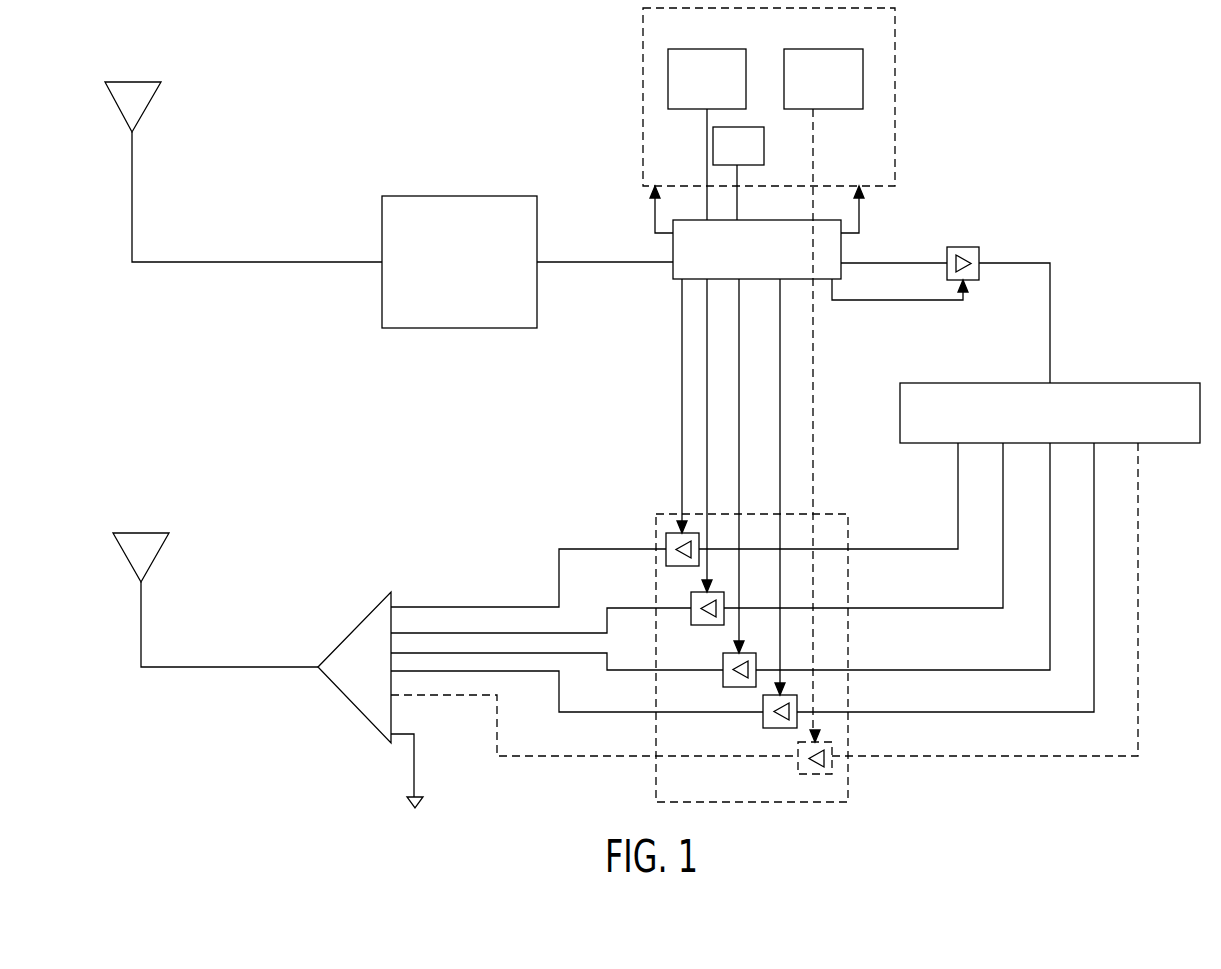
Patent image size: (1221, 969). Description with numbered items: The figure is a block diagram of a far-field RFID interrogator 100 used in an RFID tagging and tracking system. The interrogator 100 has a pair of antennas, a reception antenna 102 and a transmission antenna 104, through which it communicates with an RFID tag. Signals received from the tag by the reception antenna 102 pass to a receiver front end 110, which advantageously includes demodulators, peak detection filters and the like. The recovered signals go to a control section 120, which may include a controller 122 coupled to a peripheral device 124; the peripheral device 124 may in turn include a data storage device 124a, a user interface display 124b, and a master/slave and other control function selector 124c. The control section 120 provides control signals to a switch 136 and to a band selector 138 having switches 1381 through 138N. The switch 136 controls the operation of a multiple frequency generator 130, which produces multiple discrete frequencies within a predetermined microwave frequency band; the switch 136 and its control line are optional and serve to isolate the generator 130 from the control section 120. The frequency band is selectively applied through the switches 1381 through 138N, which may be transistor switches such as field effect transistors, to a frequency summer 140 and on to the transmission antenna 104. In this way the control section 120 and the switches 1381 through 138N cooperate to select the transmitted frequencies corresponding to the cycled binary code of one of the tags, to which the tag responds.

The RFID interrogator 100 is at (1046, 142).
The reception antenna 102 is at (132, 101).
The transmission antenna 104 is at (141, 552).
The receiver front end 110 is at (471, 276).
The control section 120 is at (578, 122).
The controller 122 is at (771, 263).
The peripheral device 124 is at (895, 100).
The data storage device 124a is at (725, 91).
The user interface display 124b is at (757, 159).
The master/slave and other control function selector 124c is at (841, 91).
The multiple frequency generator 130 is at (1064, 427).
The switch 136 is at (983, 250).
The band selector 138 is at (828, 514).
The switch 1381 is at (666, 548).
The switch 138N is at (835, 771).
The frequency summer 140 is at (345, 695).